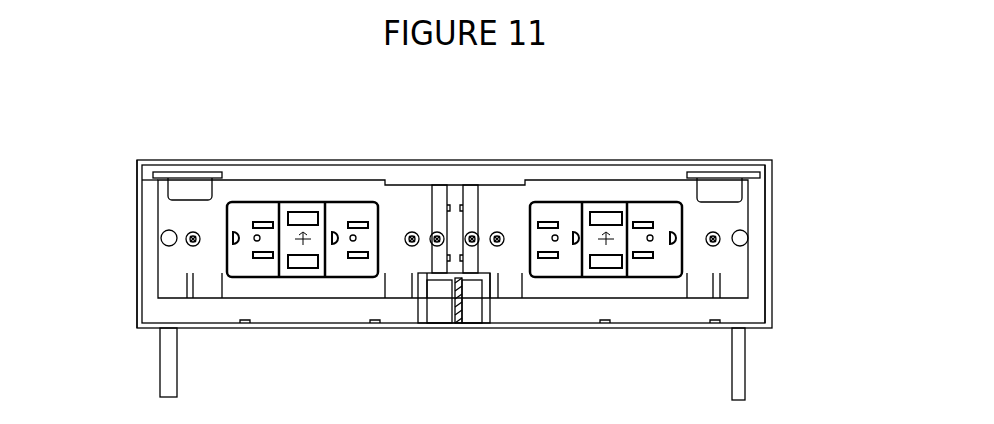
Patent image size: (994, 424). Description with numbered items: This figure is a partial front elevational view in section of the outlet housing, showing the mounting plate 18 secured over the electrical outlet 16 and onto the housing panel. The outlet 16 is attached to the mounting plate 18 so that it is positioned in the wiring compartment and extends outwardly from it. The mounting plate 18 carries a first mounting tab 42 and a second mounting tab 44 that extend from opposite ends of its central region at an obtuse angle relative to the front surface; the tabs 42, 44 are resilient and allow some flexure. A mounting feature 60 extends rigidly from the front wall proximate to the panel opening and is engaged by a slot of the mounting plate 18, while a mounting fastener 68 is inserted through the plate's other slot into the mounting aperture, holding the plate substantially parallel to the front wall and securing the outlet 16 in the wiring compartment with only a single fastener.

The electrical outlet 16 is at (262, 200).
The mounting plate 18 is at (175, 283).
The first mounting tab 42 is at (165, 222).
The second mounting tab 44 is at (440, 205).
The mounting feature 60 is at (160, 238).
The mounting fastener 68 is at (500, 232).